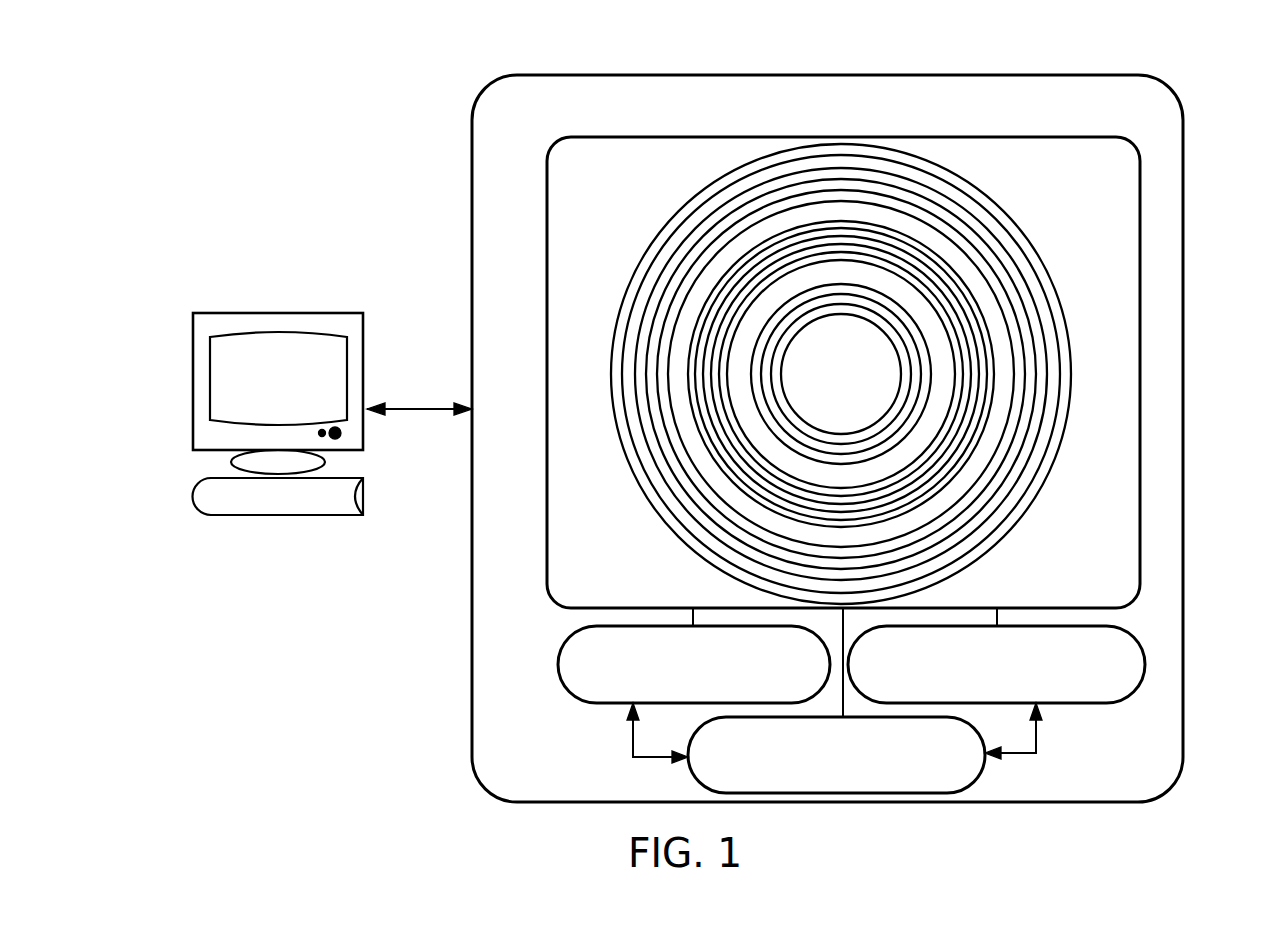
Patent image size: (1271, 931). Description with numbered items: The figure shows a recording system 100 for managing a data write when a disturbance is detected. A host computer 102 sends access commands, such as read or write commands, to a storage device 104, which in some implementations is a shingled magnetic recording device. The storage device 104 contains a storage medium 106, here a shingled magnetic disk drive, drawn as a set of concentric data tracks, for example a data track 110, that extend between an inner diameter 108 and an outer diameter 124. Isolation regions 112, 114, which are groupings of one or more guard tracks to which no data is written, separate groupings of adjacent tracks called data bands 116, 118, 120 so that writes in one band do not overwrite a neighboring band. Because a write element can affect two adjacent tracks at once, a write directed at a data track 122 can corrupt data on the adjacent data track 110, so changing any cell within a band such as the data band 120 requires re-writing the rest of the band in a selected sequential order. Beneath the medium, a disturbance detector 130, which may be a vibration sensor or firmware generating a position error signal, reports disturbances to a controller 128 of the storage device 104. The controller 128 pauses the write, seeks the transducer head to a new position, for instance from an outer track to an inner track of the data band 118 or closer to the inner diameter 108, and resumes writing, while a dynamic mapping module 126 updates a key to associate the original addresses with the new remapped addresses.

The recording system 100 is at (240, 94).
The host computer 102 is at (280, 313).
The storage device 104 is at (470, 622).
The storage medium 106 is at (675, 137).
The inner diameter 108 is at (841, 314).
The data track 110 is at (682, 237).
The isolation region 112 is at (982, 282).
The isolation region 114 is at (897, 295).
The data band 116 is at (907, 410).
The data band 118 is at (968, 423).
The data band 120 is at (1020, 413).
The data track 122 is at (647, 267).
The outer diameter 124 is at (784, 150).
The dynamic mapping module 126 is at (996, 664).
The controller 128 is at (836, 755).
The disturbance detector 130 is at (694, 664).